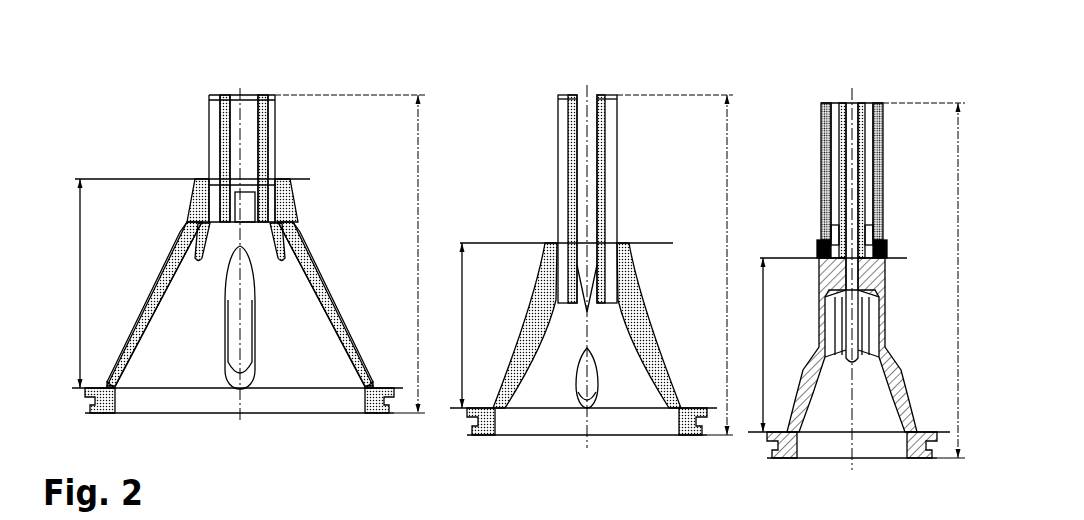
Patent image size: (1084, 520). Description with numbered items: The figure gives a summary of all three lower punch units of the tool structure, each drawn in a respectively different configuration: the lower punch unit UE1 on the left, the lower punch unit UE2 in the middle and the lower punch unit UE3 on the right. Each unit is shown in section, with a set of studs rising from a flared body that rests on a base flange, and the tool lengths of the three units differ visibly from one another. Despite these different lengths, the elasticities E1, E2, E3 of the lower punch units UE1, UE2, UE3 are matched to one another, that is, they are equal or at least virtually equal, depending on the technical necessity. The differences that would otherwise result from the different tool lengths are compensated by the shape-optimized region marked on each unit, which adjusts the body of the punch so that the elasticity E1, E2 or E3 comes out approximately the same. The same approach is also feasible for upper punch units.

The lower punch unit UE1 is at (231, 228).
The lower punch unit UE2 is at (578, 241).
The lower punch unit UE3 is at (846, 252).
The elasticity of the lower punch unit E1 is at (350, 254).
The elasticity of the lower punch unit E2 is at (675, 265).
The elasticity of the lower punch unit E3 is at (924, 280).